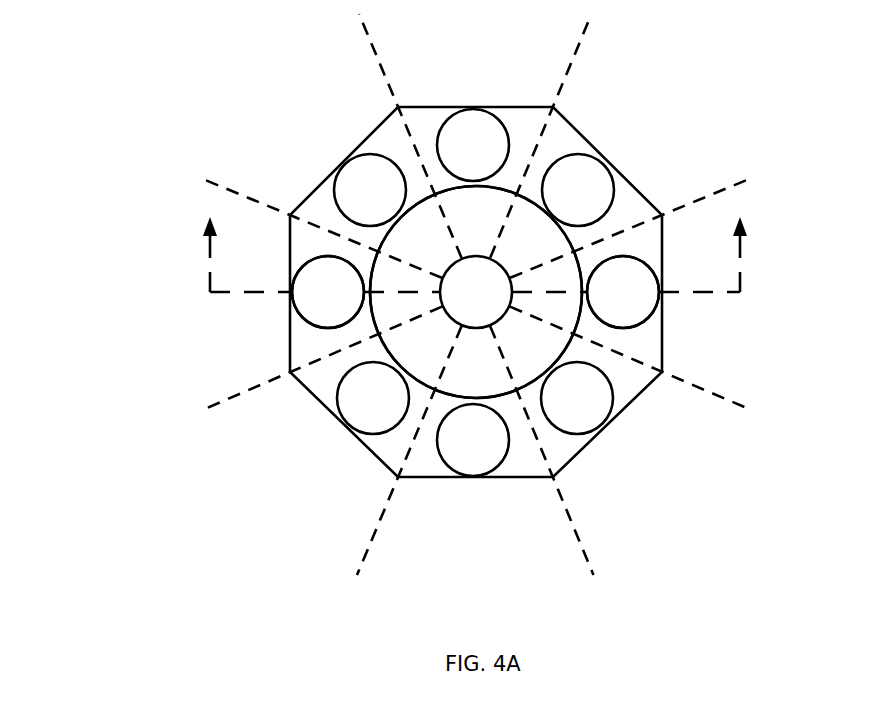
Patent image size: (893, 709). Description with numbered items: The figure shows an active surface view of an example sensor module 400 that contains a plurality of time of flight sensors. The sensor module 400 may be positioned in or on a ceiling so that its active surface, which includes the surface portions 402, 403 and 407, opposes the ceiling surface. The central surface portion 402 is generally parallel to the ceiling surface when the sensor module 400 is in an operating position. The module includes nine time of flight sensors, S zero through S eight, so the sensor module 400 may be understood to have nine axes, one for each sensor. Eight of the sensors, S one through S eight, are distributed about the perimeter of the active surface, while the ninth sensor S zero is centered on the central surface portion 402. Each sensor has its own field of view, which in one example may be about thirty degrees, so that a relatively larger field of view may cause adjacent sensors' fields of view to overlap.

The sensor module 400 is at (120, 38).
The central surface portion 402 is at (494, 204).
The surface portion 403 is at (646, 248).
The surface portion 407 is at (314, 254).